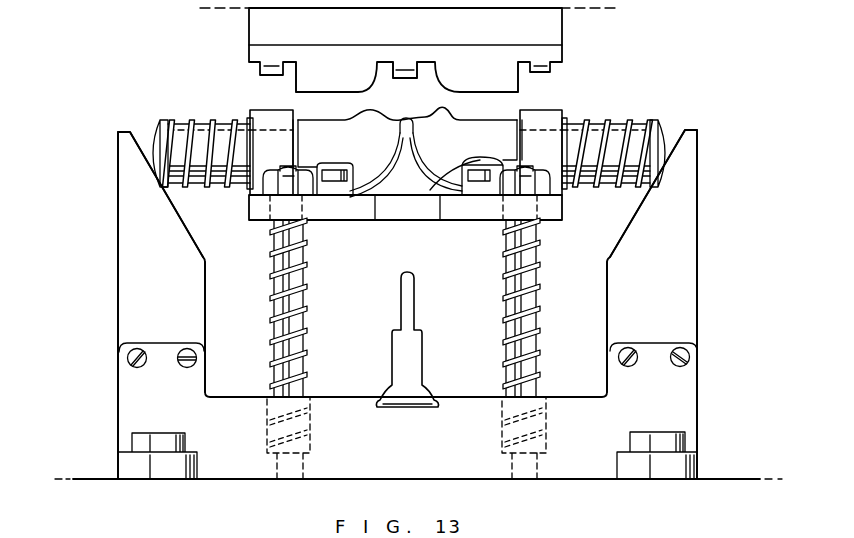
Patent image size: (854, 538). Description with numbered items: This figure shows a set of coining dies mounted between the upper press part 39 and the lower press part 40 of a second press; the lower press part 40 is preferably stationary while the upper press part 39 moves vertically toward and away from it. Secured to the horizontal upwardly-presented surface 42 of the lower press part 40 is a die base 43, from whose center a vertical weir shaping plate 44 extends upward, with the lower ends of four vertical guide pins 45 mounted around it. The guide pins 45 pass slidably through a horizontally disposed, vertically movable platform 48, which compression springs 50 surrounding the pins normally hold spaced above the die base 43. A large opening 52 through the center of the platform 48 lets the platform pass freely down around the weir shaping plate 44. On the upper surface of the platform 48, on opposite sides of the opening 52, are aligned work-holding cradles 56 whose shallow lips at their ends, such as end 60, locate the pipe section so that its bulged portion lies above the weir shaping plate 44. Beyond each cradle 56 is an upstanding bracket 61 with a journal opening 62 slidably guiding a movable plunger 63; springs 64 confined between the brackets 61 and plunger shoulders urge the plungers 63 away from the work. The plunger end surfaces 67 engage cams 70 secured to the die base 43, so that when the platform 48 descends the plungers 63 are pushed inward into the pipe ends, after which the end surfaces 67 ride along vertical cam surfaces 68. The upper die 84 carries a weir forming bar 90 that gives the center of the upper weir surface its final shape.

The upper press part 39 is at (225, 10).
The upper die 84 is at (513, 80).
The weir forming bar 90 is at (404, 79).
The upstanding bracket 61 is at (285, 151).
The cradle end 60 is at (407, 151).
The work-holding cradle 56 is at (462, 181).
The journal opening 62 is at (406, 180).
The platform 48 is at (476, 216).
The large opening 52 is at (375, 210).
The vertical guide pin 45 is at (298, 250).
The compression spring 50 is at (307, 302).
The weir shaping plate 44 is at (409, 292).
The die base 43 is at (465, 407).
The cam 70 is at (183, 222).
The vertical cam surface 68 is at (205, 305).
The upwardly-presented surface 42 is at (90, 480).
The lower press part 40 is at (731, 480).
The spring 64 is at (188, 126).
The movable plunger 63 is at (222, 128).
The plunger end surface 67 is at (660, 143).